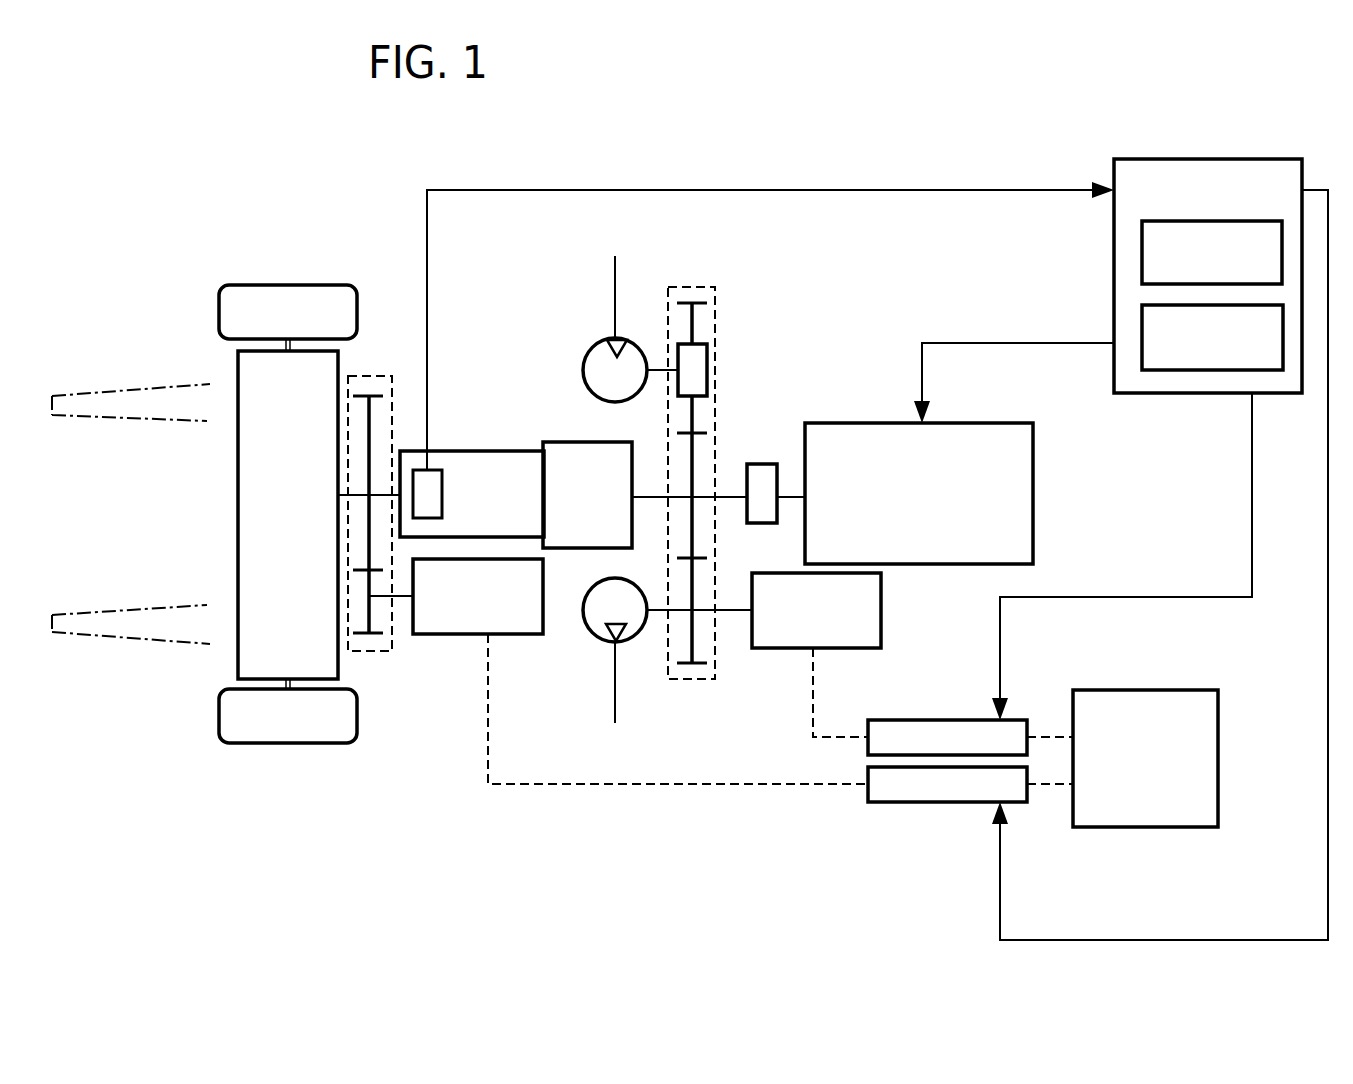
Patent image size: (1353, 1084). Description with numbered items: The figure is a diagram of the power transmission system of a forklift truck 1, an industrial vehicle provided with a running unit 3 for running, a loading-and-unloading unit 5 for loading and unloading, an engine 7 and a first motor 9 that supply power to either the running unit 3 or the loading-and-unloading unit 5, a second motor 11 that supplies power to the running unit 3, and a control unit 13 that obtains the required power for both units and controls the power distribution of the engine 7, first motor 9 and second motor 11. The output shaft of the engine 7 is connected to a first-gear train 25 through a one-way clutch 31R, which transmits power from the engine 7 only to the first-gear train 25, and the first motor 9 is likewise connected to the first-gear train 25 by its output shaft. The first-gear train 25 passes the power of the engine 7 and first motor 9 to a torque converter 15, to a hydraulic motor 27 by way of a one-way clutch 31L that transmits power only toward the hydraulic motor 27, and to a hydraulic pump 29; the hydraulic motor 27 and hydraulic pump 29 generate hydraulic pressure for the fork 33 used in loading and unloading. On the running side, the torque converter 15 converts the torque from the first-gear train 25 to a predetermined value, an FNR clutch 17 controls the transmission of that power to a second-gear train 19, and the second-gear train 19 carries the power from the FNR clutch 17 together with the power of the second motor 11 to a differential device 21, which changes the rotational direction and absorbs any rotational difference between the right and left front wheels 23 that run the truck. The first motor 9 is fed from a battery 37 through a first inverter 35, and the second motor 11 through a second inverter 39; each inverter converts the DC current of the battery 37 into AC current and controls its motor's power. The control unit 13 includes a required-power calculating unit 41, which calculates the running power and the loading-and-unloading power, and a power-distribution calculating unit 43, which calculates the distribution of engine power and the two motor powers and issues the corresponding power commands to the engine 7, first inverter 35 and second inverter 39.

The forklift truck 1 is at (139, 176).
The running unit 3 is at (412, 797).
The loading-and-unloading unit 5 is at (689, 858).
The engine 7 is at (1033, 491).
The first motor 9 is at (881, 608).
The second motor 11 is at (433, 634).
The control unit 13 is at (1173, 265).
The torque converter 15 is at (567, 442).
The FNR clutch 17 is at (479, 451).
The second-gear train 19 is at (376, 373).
The differential device 21 is at (238, 510).
The front wheels 23 is at (297, 283).
The first-gear train 25 is at (729, 273).
The hydraulic motor 27 is at (592, 348).
The hydraulic pump 29 is at (593, 638).
The one-way clutch 31L is at (708, 358).
The one-way clutch 31R is at (760, 463).
The fork 33 is at (104, 415).
The first inverter 35 is at (940, 720).
The battery 37 is at (1148, 827).
The second inverter 39 is at (955, 802).
The required-power calculating unit 41 is at (1142, 242).
The power-distribution calculating unit 43 is at (1200, 370).